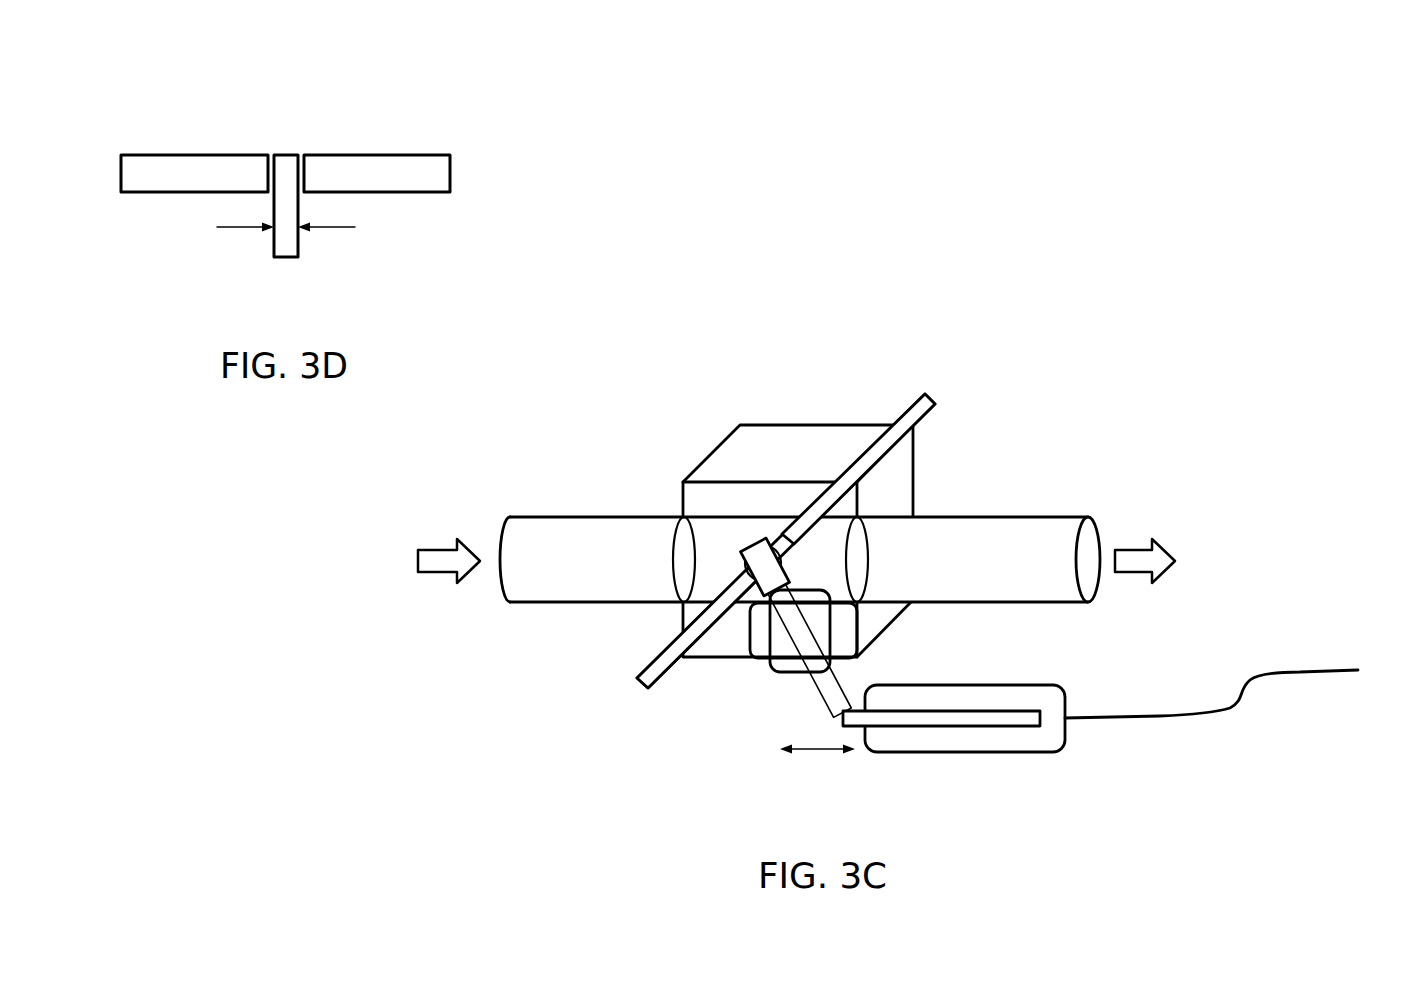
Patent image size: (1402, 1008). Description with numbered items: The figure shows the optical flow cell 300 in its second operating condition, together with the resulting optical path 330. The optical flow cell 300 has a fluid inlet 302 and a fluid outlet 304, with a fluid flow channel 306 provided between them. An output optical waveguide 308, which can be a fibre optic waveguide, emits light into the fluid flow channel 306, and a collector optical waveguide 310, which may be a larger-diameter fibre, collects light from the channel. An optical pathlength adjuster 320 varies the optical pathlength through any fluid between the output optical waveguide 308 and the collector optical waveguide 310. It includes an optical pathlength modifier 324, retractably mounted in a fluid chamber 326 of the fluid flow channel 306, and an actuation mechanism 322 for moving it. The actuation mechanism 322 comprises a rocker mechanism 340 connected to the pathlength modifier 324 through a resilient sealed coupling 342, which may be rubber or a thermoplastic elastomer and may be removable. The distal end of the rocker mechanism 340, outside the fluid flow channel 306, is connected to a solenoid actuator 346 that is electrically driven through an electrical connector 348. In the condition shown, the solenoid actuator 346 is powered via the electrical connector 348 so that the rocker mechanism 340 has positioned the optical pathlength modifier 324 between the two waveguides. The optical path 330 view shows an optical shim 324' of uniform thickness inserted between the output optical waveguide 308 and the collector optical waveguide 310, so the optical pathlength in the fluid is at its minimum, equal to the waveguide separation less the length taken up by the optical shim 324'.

In FIG. 3C, the optical flow cell 300 is at (866, 524).
In FIG. 3C, the fluid inlet 302 is at (503, 532).
In FIG. 3C, the fluid outlet 304 is at (1088, 538).
In FIG. 3C, the fluid flow channel 306 is at (465, 603).
In FIG. 3D, the output optical waveguide 308 is at (137, 167).
In FIG. 3C, the output optical waveguide 308 is at (912, 410).
In FIG. 3D, the collector optical waveguide 310 is at (440, 172).
In FIG. 3C, the collector optical waveguide 310 is at (653, 668).
In FIG. 3C, the optical pathlength adjuster 320 is at (950, 600).
In FIG. 3C, the actuation mechanism 322 is at (868, 766).
In FIG. 3C, the optical pathlength modifier 324 is at (863, 512).
In FIG. 3D, the optical shim 324' is at (314, 242).
In FIG. 3C, the fluid chamber 326 is at (700, 541).
In FIG. 3D, the optical path 330 is at (297, 180).
In FIG. 3C, the rocker mechanism 340 is at (785, 665).
In FIG. 3C, the resilient sealed coupling 342 is at (838, 629).
In FIG. 3C, the solenoid actuator 346 is at (990, 753).
In FIG. 3C, the electrical connector 348 is at (1170, 718).